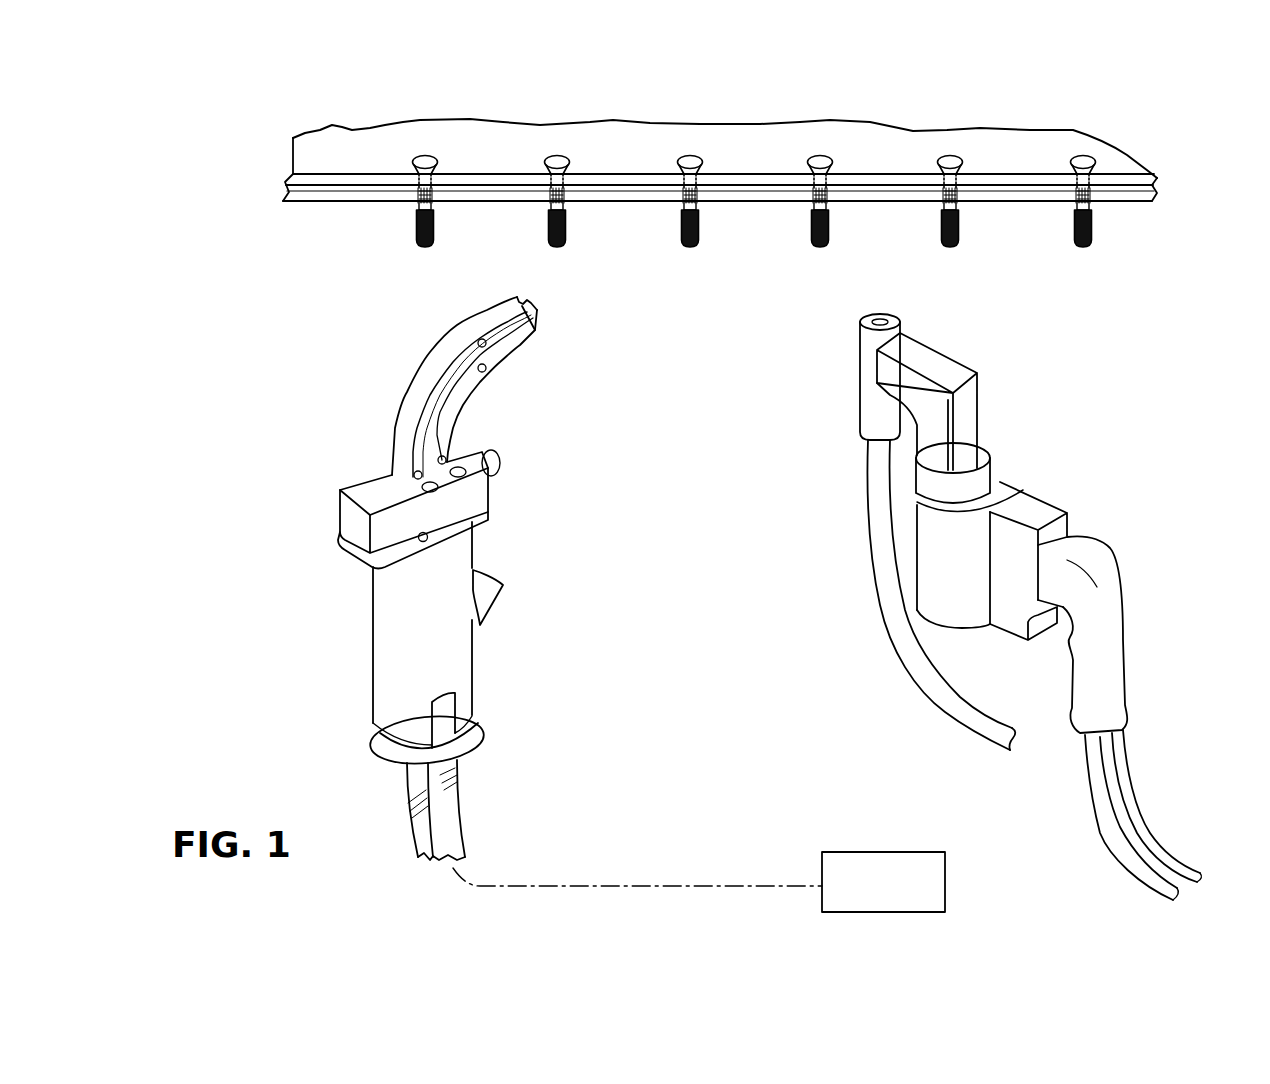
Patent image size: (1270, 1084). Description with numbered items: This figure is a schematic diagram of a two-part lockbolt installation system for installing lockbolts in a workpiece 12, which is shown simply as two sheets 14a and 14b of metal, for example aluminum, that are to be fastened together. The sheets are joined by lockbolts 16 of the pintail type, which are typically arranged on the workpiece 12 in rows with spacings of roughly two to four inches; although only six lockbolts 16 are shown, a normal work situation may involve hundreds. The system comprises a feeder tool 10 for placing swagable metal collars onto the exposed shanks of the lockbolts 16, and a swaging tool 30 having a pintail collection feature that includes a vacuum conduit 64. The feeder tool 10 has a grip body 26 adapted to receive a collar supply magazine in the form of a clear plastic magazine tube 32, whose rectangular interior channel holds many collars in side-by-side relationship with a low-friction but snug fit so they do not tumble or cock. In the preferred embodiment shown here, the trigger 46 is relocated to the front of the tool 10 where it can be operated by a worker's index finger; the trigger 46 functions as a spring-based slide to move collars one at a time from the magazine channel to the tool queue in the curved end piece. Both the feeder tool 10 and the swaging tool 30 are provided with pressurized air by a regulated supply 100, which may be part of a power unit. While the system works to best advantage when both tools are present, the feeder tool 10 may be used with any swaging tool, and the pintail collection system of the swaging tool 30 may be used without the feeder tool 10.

The feeder tool 10 is at (533, 460).
The workpiece 12 is at (1115, 165).
The sheet 14a is at (310, 155).
The sheet 14b is at (296, 195).
The lockbolts 16 is at (418, 214).
The grip body 26 is at (387, 632).
The swaging tool 30 is at (983, 356).
The magazine tube 32 is at (442, 815).
The trigger 46 is at (352, 548).
The vacuum conduit 64 is at (876, 585).
The regulated supply 100 is at (880, 852).